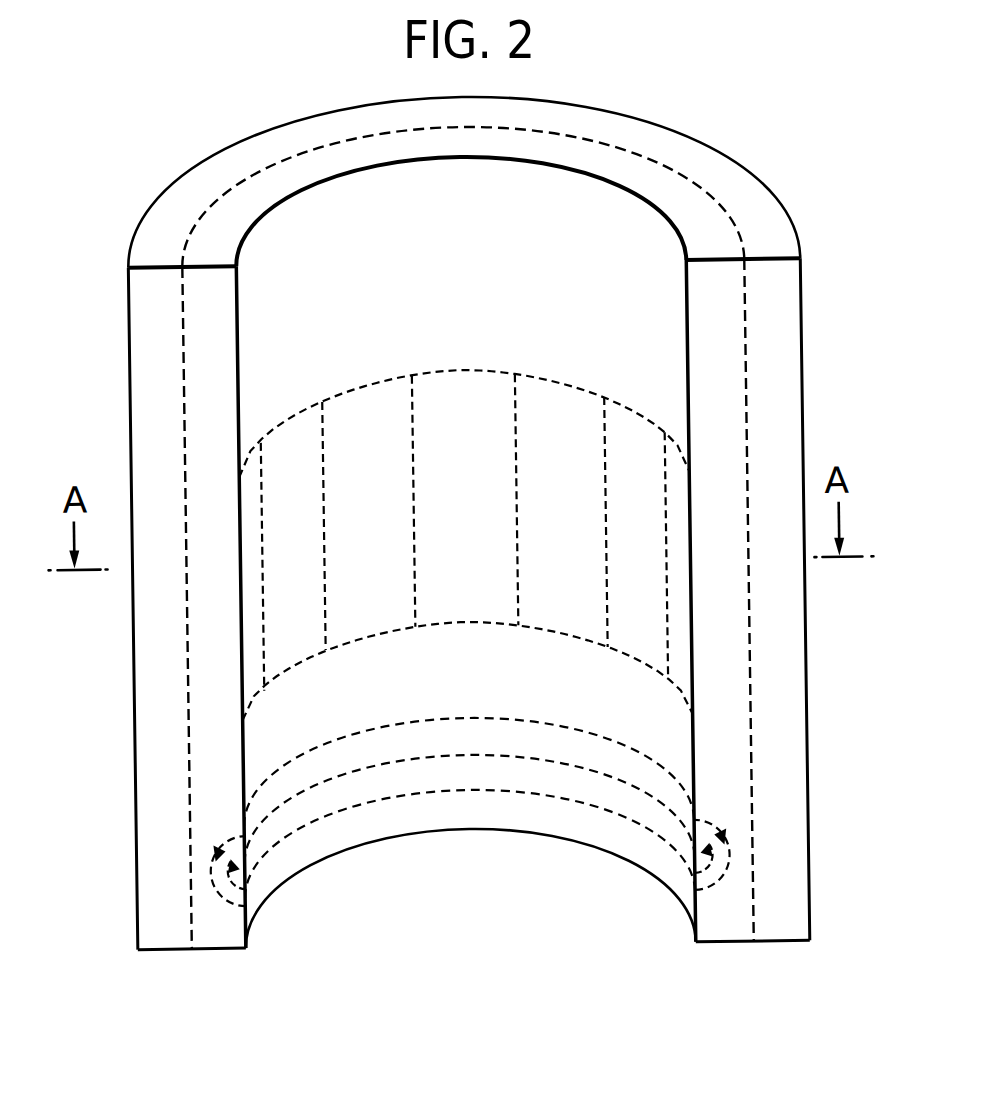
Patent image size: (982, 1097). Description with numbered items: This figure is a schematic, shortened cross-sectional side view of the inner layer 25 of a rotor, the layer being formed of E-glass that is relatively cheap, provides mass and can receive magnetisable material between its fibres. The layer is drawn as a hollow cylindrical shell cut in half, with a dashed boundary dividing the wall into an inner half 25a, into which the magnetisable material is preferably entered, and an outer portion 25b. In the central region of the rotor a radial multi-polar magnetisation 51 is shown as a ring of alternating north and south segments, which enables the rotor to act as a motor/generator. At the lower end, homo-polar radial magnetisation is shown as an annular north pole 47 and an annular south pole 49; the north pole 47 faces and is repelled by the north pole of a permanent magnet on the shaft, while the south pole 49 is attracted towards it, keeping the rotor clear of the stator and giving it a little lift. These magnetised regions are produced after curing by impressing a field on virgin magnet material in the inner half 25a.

The inner layer 25 is at (492, 514).
The inner half of the inner layer 25a is at (252, 207).
The outer layer of housing 25b is at (168, 211).
The radial multi-polar magnetisation 51 is at (375, 381).
The north pole 47 is at (391, 747).
The south pole 49 is at (433, 778).